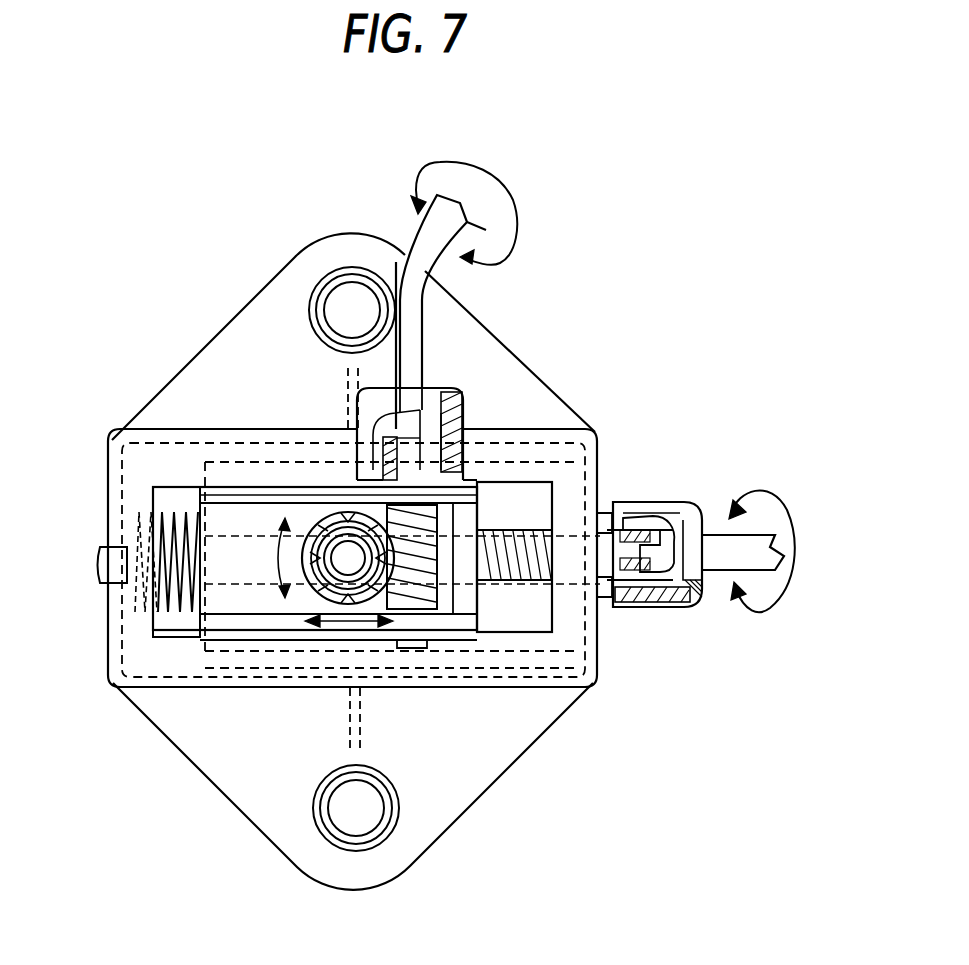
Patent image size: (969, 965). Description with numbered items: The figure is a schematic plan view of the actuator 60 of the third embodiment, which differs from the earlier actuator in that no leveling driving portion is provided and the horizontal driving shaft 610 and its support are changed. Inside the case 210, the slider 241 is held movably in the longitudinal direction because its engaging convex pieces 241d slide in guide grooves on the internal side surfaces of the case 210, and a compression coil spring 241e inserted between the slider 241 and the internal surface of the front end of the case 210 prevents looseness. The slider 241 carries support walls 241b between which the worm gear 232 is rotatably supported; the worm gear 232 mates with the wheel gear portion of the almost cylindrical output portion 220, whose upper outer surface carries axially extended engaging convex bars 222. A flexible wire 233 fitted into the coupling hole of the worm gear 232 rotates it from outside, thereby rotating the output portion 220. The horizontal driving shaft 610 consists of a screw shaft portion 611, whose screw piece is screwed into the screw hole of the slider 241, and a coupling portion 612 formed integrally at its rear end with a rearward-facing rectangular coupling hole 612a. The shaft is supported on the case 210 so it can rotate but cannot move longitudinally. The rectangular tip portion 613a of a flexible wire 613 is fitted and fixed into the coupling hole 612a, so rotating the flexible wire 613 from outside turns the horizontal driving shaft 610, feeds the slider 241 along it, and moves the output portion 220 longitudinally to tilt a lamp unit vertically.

The actuator 60 is at (195, 320).
The case 210 is at (492, 362).
The output portion 220 is at (325, 595).
The engaging convex bars 222 is at (322, 517).
The worm gear 232 is at (433, 537).
The flexible wire 233 is at (427, 263).
The slider 241 is at (237, 600).
The support walls 241b is at (277, 497).
The engaging convex pieces 241d is at (256, 460).
The compression coil spring 241e is at (163, 490).
The horizontal driving shaft 610 is at (533, 582).
The screw shaft portion 611 is at (503, 585).
The coupling portion 612 is at (633, 525).
The coupling hole 612a is at (670, 537).
The flexible wire 613 is at (752, 555).
The tip portion 613a is at (635, 600).